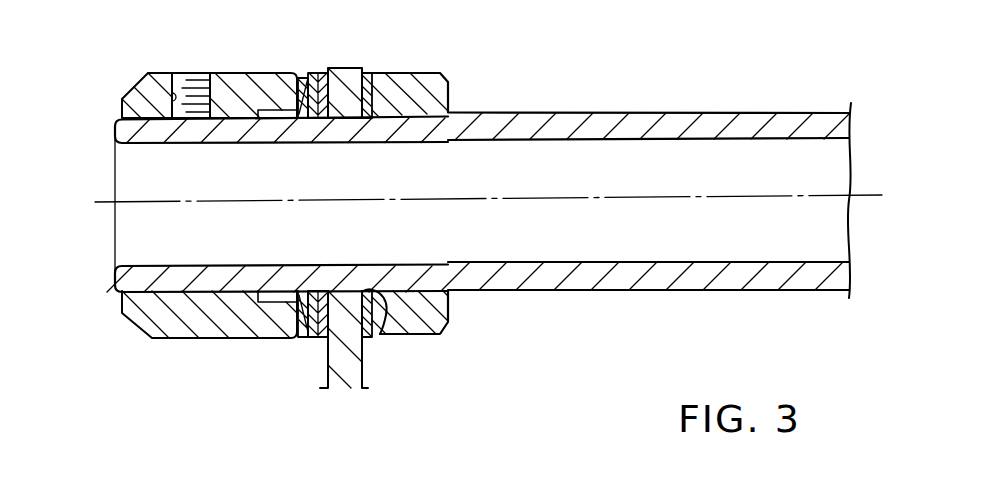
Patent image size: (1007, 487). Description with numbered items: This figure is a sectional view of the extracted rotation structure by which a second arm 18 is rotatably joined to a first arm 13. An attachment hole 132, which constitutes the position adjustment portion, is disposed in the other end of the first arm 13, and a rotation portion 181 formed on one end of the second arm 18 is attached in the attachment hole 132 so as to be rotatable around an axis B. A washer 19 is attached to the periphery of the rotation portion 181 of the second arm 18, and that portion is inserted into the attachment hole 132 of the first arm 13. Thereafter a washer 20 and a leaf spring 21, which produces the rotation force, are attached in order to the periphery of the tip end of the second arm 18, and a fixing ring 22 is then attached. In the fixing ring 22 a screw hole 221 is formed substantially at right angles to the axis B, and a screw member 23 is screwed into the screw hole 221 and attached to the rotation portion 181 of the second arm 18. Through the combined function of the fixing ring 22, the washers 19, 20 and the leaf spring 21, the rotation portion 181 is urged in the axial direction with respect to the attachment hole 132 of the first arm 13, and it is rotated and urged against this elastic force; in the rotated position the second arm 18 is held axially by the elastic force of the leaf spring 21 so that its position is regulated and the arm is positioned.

The first arm 13 is at (342, 375).
The attachment hole 132 is at (384, 330).
The second arm 18 is at (626, 112).
The rotation portion 181 is at (118, 290).
The washer 19 is at (367, 73).
The washer 20 is at (325, 73).
The leaf spring 21 is at (300, 77).
The fixing ring 22 is at (220, 73).
The screw hole 221 is at (135, 88).
The screw member 23 is at (190, 73).
The axis B is at (852, 197).